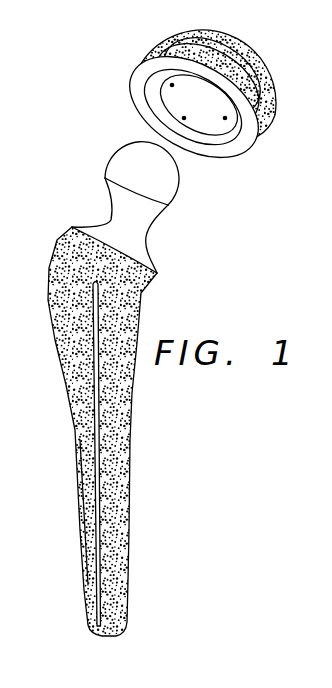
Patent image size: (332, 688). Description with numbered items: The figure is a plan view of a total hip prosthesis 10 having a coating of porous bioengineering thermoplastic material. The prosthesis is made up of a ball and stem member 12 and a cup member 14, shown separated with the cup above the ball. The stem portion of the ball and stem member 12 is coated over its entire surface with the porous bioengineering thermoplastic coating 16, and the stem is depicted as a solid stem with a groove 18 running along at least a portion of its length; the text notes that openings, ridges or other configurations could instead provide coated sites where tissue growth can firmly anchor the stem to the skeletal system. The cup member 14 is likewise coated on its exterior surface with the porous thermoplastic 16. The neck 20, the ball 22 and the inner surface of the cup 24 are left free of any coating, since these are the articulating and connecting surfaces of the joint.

The total hip prosthesis 10 is at (161, 330).
The ball and stem member 12 is at (131, 412).
The cup member 14 is at (255, 142).
The porous bioengineering thermoplastic coating 16 is at (253, 53).
The groove 18 is at (78, 498).
The neck 20 is at (112, 218).
The ball 22 is at (128, 152).
The inner surface of the cup 24 is at (182, 90).